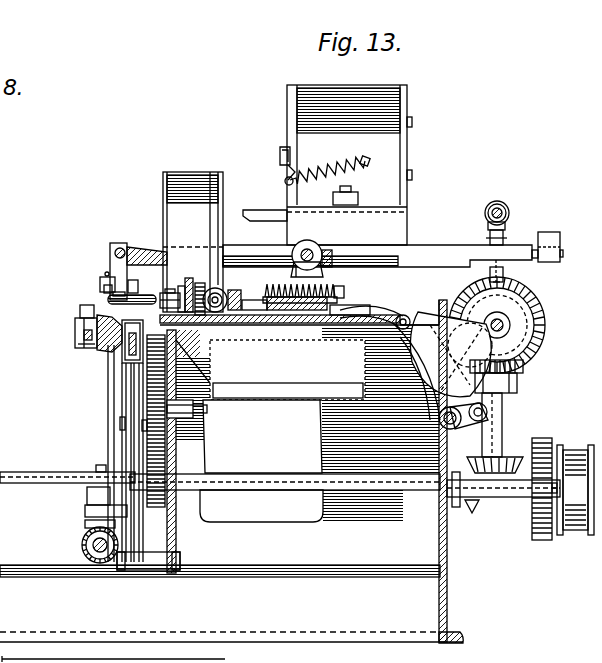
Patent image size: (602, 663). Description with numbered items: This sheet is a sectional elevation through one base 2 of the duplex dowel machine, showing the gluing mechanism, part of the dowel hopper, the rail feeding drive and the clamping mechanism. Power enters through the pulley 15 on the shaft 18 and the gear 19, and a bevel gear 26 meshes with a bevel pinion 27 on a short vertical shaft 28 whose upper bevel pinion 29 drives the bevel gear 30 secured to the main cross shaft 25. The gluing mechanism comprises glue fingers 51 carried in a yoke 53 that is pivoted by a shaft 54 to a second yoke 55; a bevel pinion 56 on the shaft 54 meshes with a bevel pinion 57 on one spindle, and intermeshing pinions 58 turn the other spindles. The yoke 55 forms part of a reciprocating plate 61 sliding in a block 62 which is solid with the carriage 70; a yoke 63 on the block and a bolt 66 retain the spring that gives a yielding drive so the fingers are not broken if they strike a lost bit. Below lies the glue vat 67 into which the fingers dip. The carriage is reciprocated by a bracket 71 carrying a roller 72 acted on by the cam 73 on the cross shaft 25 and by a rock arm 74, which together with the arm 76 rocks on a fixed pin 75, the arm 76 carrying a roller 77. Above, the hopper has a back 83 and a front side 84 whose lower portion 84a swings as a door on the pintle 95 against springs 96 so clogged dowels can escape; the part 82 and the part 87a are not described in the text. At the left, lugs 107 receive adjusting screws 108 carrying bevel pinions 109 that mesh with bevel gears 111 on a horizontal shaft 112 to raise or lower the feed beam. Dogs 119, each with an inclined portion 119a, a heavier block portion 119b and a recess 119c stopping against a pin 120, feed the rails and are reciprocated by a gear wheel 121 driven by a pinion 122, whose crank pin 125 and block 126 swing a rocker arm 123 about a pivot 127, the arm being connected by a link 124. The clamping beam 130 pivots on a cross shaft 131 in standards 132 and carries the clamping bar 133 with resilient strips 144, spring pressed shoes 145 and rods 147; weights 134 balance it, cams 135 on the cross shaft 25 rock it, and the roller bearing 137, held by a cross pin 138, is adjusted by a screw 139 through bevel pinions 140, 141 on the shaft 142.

The base 2 is at (231, 481).
The pulley 15 is at (572, 452).
The shaft 18 is at (557, 520).
The gear 19 is at (532, 535).
The main cross shaft 25 is at (503, 314).
The bevel gear 26 is at (470, 500).
The bevel pinion 27 is at (480, 458).
The short vertical shaft 28 is at (517, 386).
The bevel pinion 29 is at (525, 366).
The bevel gear 30 is at (546, 326).
The glue fingers 51 is at (142, 306).
The U-shaped frame or yoke 53 is at (190, 290).
The shaft 54 is at (236, 292).
The yoke 55 is at (252, 312).
The bevel pinion 56 is at (220, 311).
The bevel pinion 57 is at (192, 314).
The intermeshing pinions 58 is at (200, 283).
The reciprocating plate 61 is at (262, 300).
The block 62 is at (280, 329).
The yoke 63 is at (345, 283).
The bolt 66 is at (321, 290).
The glue vat or receptacle 67 is at (270, 370).
The carriage 70 is at (340, 320).
The bracket 71 is at (390, 312).
The roller 72 is at (410, 316).
The cam 73 is at (451, 354).
The rock arm 74 is at (408, 375).
The fixed pin 75 is at (440, 424).
The arm 76 is at (500, 425).
The roller 77 is at (488, 410).
The spring 82 is at (274, 182).
The back of the hopper 83 is at (410, 111).
The front side of the hopper 84 is at (287, 104).
The lower portion of the front side of the hopper 84a is at (286, 185).
The bracket 87a is at (285, 219).
The pintle 95 is at (279, 152).
The springs 96 is at (356, 168).
The projections or lugs 107 is at (87, 496).
The adjusting screws 108 is at (98, 466).
The bevel pinions 109 is at (86, 524).
The bevel gears 111 is at (82, 548).
The horizontal shaft 112 is at (100, 547).
The dogs 119 is at (75, 326).
The upwardly projecting inclined portion 119a is at (80, 308).
The main portion of block formation 119b is at (78, 340).
The recess 119c is at (90, 348).
The pin 120 is at (97, 333).
The gear wheel 121 is at (203, 443).
The pinion 122 is at (285, 498).
The rocker arm 123 is at (128, 397).
The link 124 is at (128, 358).
The crank pin 125 is at (120, 423).
The block 126 is at (142, 429).
The pivot 127 is at (115, 567).
The beam or frame 130 is at (372, 253).
The cross shaft 131 is at (315, 250).
The standards 132 is at (303, 251).
The clamping bar 133 is at (105, 283).
The adjusting weights 134 is at (546, 235).
The cams 135 is at (544, 310).
The bearing 137 is at (505, 272).
The cross pin 138 is at (490, 276).
The adjusting screw 139 is at (505, 240).
The bevel pinion 140 is at (488, 228).
The pinion 141 is at (486, 214).
The shaft or rod 142 is at (491, 206).
The strips of resilient material 144 is at (134, 280).
The spring pressed shoes 145 is at (112, 300).
The rod 147 is at (112, 270).